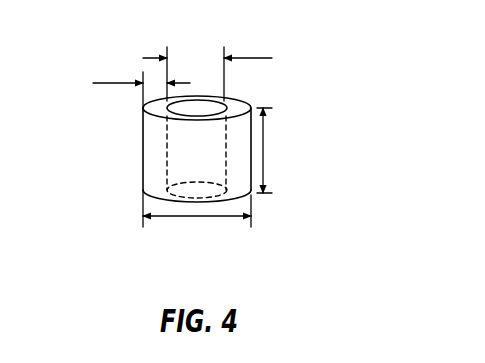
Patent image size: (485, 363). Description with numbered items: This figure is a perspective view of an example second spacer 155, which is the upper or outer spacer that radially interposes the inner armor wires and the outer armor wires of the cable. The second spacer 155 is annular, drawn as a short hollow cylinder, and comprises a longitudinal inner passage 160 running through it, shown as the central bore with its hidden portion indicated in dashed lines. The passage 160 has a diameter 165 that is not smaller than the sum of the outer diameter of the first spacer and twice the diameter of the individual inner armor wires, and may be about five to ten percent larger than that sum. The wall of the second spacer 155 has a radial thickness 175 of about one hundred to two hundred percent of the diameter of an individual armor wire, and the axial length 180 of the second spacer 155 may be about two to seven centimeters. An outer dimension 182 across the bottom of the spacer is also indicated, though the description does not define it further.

The second spacer 155 is at (143, 185).
The longitudinal inner passage 160 is at (167, 145).
The diameter of the passage 165 is at (250, 57).
The radial thickness 175 is at (115, 82).
The axial length 180 is at (265, 155).
The outer diameter of spacer 182 is at (252, 216).